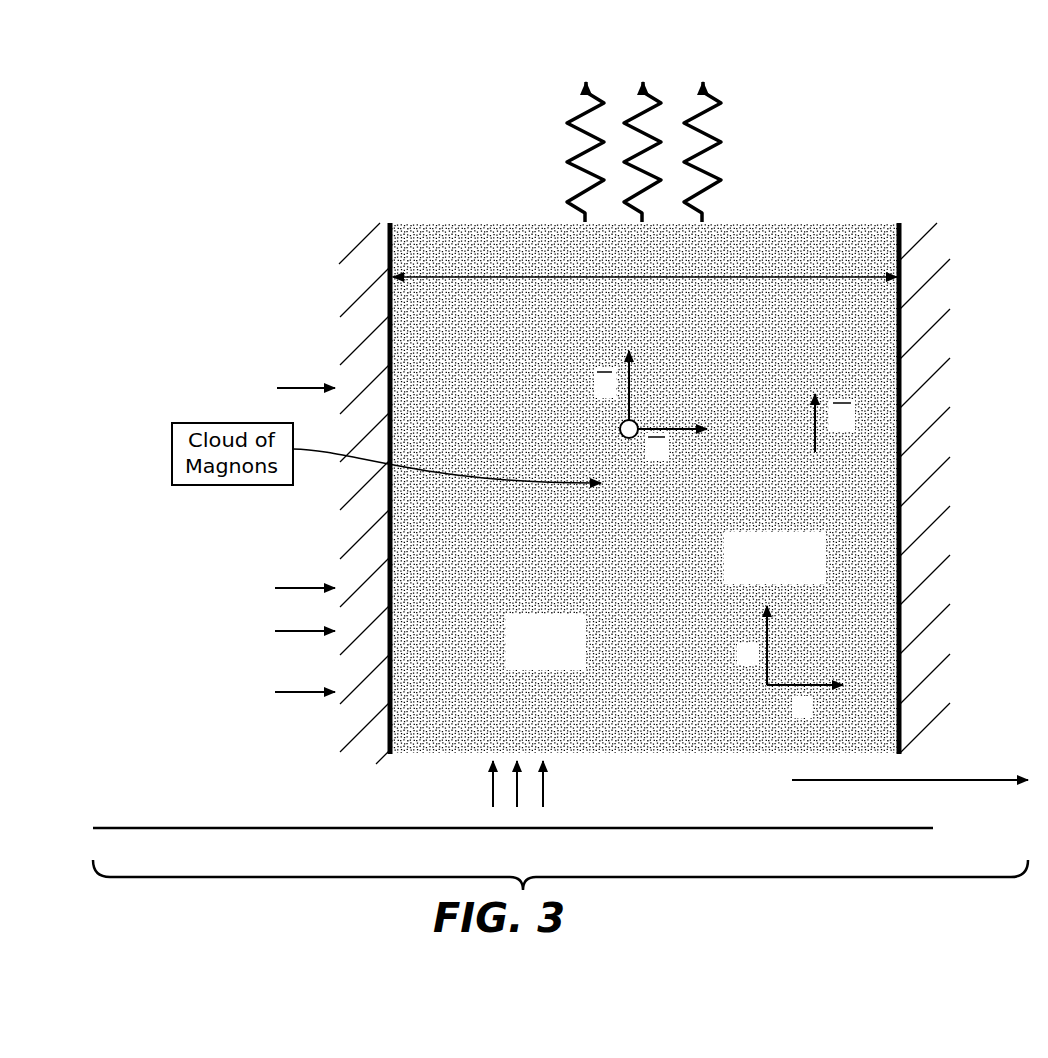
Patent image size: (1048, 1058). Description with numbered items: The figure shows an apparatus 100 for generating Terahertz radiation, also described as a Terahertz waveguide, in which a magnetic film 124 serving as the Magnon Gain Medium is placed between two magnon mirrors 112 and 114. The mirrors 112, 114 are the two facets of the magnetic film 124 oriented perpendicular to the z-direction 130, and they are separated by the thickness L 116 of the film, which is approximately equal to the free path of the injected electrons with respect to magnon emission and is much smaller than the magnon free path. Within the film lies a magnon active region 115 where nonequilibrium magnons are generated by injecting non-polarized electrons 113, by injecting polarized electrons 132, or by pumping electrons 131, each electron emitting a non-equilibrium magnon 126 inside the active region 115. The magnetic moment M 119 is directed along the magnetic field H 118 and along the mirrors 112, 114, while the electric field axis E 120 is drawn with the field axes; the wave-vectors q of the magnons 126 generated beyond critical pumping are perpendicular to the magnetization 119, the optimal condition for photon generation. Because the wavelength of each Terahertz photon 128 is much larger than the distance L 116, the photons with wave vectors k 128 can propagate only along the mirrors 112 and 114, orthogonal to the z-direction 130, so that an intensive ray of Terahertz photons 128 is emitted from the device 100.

The apparatus for generation of Terahertz radiation 100 is at (180, 736).
The magnon mirror 112 is at (356, 249).
The injected electrons 113 is at (301, 586).
The magnon mirror 114 is at (894, 240).
The active region 115 is at (548, 612).
The thickness L 116 is at (557, 276).
The magnetic field H 118 is at (769, 646).
The magnetic moment M 119 is at (813, 420).
The electric field E axis 120 is at (787, 684).
The magnetic film 124 is at (683, 586).
The non-equilibrium magnons 126 is at (661, 427).
The Terahertz photons 128 is at (706, 95).
The z-direction 130 is at (968, 782).
The pumping electrons 131 is at (632, 793).
The polarized electrons 132 is at (304, 386).